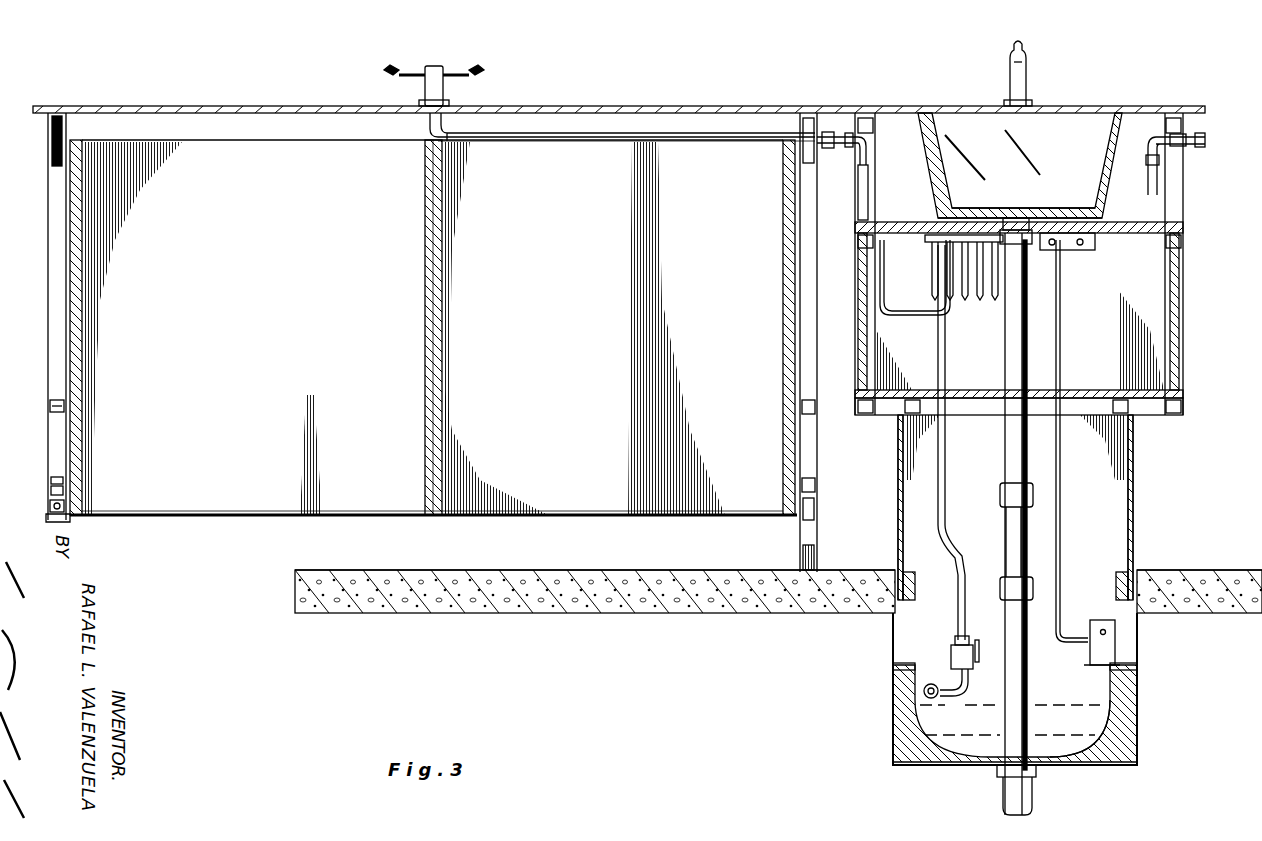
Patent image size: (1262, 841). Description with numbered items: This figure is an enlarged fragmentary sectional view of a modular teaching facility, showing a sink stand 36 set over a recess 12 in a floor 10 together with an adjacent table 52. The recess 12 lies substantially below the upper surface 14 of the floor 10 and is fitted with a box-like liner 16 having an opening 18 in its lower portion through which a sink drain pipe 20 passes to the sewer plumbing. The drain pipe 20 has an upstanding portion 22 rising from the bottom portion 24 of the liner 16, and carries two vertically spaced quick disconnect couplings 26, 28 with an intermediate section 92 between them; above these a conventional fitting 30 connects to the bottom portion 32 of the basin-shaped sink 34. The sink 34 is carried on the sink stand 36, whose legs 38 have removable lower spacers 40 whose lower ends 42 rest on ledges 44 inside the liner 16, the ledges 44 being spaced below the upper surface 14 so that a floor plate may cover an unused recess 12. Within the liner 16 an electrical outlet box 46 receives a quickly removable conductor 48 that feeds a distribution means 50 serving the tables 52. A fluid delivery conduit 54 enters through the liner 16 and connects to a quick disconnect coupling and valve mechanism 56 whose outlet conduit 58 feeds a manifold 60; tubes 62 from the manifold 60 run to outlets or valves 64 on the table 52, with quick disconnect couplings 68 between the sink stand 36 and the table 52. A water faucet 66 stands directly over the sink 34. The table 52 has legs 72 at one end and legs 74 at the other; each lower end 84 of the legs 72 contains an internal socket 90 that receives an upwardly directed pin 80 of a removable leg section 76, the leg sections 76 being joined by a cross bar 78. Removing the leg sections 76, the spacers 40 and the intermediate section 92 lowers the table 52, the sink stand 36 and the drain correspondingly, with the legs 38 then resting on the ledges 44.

The floor 10 is at (472, 578).
The recess 12 is at (893, 732).
The upper surface 14 is at (690, 578).
The box-like liner 16 is at (1137, 734).
The opening 18 is at (1037, 772).
The sink drain pipe 20 is at (1000, 806).
The upstanding portion 22 is at (1027, 700).
The bottom portion 24 is at (1080, 752).
The quick disconnect coupling 26 is at (1000, 490).
The quick disconnect coupling 28 is at (1000, 580).
The fitting 30 is at (1030, 250).
The bottom portion 32 is at (1046, 208).
The basin-shaped sink 34 is at (1103, 125).
The sink stand 36 is at (1183, 350).
The legs 38 is at (898, 432).
The spacers 40 is at (908, 612).
The lower ends 42 is at (893, 664).
The ledges 44 is at (900, 672).
The electrical outlet box 46 is at (1090, 656).
The conductor 48 is at (1061, 366).
The distribution means 50 is at (1095, 250).
The table 52 is at (567, 106).
The fluid delivery conduit 54 is at (936, 698).
The quick disconnect coupling and valve mechanism 56 is at (962, 676).
The outlet conduit 58 is at (948, 444).
The manifold 60 is at (930, 243).
The tubes 62 is at (980, 300).
The outlets or valves 64 is at (437, 67).
The water faucet 66 is at (1028, 58).
The quick disconnect couplings 68 is at (838, 132).
The legs 72 is at (48, 381).
The legs 74 is at (818, 355).
The leg sections 76 is at (66, 522).
The cross bar 78 is at (50, 508).
The pins 80 is at (51, 490).
The lower ends 84 is at (82, 490).
The internal socket 90 is at (51, 480).
The intermediate section 92 is at (1005, 522).